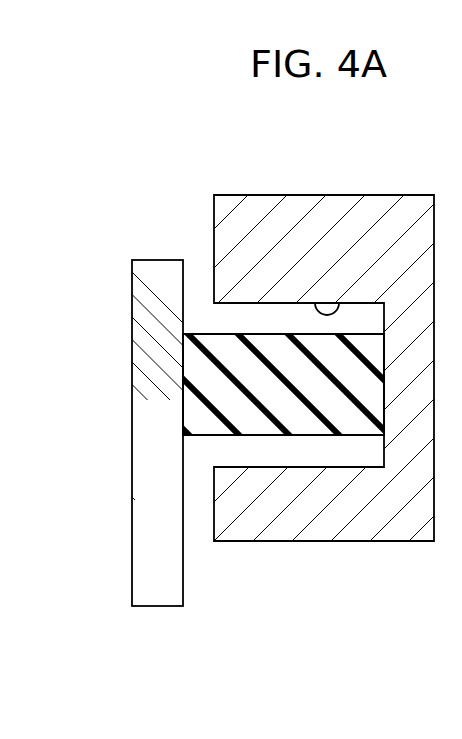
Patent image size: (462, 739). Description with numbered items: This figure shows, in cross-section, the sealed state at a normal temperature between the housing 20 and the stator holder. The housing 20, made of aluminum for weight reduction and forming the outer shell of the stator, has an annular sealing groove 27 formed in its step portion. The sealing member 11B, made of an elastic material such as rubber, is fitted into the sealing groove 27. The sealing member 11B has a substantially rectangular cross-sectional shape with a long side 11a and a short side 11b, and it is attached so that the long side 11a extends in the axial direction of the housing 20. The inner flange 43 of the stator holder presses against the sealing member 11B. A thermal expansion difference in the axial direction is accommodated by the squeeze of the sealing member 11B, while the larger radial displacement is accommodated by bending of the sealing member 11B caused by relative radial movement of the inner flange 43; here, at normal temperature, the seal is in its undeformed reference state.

The housing 20 is at (272, 215).
The annular sealing groove 27 is at (338, 303).
The inner flange 43 is at (143, 328).
The sealing member 11B is at (328, 436).
The long side 11a is at (274, 437).
The short side 11b is at (182, 400).